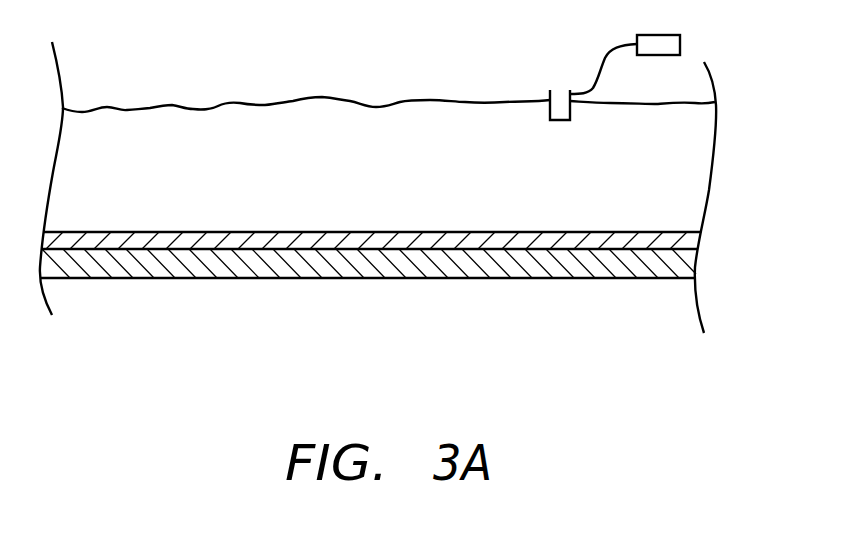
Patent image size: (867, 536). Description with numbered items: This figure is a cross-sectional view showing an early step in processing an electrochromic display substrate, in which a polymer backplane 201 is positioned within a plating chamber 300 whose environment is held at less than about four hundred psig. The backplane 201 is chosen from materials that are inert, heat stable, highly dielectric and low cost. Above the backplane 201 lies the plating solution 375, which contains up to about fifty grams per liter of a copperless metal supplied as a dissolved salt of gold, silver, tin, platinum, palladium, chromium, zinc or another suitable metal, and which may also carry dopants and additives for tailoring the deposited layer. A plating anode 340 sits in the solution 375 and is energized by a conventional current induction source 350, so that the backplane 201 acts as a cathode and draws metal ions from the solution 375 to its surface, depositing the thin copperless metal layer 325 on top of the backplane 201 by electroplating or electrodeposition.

The plating chamber 300 is at (154, 95).
The plating solution 375 is at (327, 179).
The copperless metal layer 325 is at (79, 243).
The backplane 201 is at (686, 264).
The plating anode 340 is at (557, 110).
The current induction source 350 is at (674, 42).